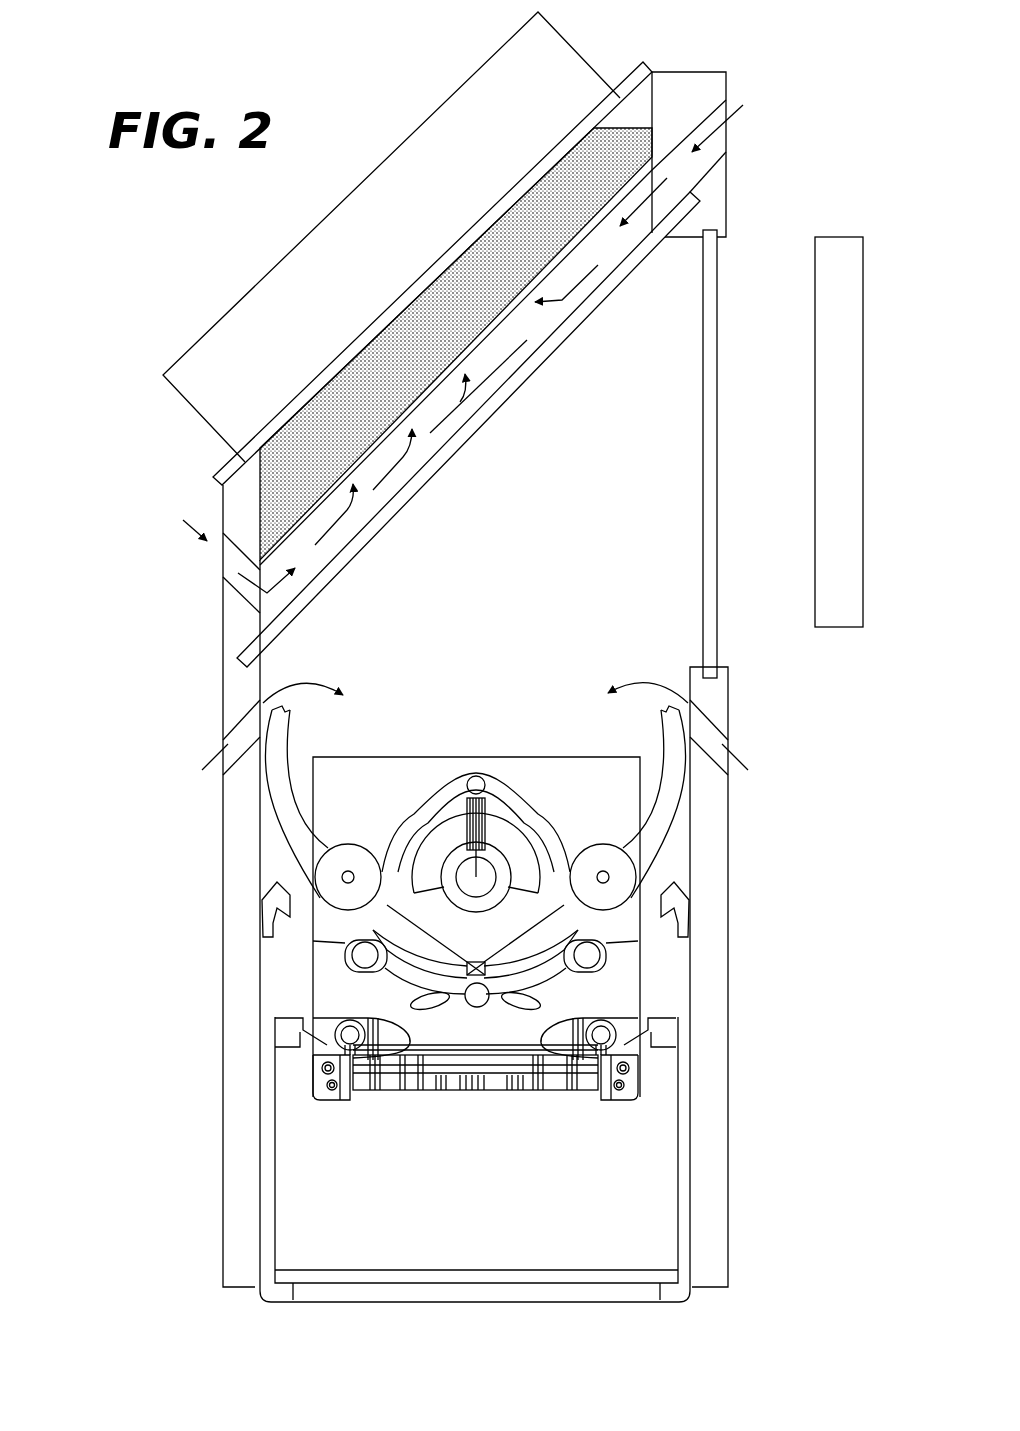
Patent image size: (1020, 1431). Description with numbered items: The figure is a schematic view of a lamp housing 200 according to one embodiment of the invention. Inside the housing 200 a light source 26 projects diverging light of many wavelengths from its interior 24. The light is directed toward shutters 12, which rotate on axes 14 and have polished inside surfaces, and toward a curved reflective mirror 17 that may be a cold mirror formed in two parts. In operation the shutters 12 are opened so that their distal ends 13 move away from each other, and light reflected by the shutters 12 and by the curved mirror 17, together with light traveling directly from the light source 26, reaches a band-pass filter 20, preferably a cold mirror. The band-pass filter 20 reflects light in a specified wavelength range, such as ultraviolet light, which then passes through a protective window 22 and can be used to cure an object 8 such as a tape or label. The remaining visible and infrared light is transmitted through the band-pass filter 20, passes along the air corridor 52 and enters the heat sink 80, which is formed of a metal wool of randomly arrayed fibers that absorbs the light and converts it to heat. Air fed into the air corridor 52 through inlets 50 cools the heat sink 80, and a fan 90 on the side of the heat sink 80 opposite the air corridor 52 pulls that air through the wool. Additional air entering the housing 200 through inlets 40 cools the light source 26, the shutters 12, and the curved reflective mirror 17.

The object 8 is at (840, 245).
The shutters 12 is at (262, 818).
The distal ends 13 is at (283, 730).
The axes 14 is at (343, 870).
The curved reflective mirror 17 is at (353, 963).
The band-pass filter 20 is at (645, 249).
The protective window 22 is at (712, 350).
The interior 24 is at (541, 817).
The light source 26 is at (483, 873).
The inlets 40 is at (223, 742).
The inlets 50 is at (716, 144).
The air corridor 52 is at (433, 446).
The heat sink 80 is at (313, 432).
The fan 90 is at (255, 300).
The lamp housing 200 is at (425, 893).